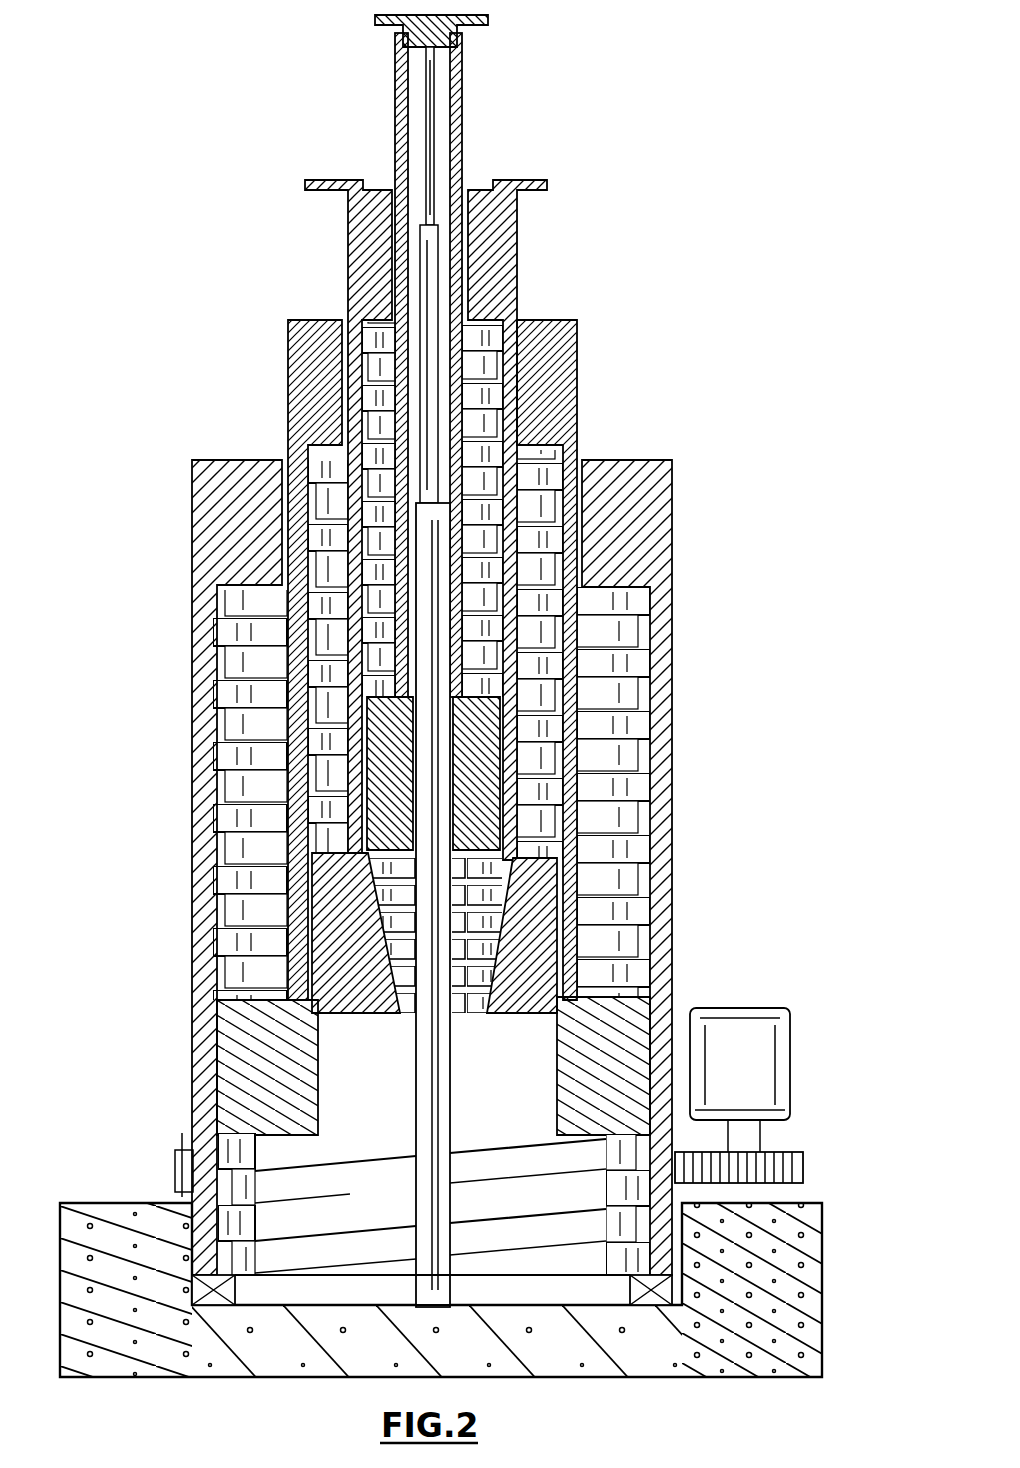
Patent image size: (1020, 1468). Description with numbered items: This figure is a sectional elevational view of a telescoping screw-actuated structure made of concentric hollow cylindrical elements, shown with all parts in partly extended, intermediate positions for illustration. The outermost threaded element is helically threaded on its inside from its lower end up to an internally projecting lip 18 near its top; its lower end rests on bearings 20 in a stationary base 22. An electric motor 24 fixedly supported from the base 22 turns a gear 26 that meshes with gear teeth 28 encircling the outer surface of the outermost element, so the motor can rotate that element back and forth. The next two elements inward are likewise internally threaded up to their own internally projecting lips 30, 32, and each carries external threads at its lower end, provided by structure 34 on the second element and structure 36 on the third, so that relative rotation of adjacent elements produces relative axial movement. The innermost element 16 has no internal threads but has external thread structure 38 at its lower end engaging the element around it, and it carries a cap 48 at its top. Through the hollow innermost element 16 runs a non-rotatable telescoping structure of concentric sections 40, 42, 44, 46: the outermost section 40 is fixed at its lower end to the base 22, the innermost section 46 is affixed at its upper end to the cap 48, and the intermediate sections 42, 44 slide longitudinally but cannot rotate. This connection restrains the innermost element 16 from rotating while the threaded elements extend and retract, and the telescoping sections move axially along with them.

The innermost element 16 is at (462, 130).
The internally projecting lip 18 is at (630, 460).
The bearings 20 is at (640, 1285).
The stationary base 22 is at (822, 1268).
The electric motor 24 is at (792, 1025).
The gear 26 is at (805, 1158).
The gear teeth 28 is at (175, 1160).
The internally projecting lip 30 is at (292, 420).
The internally projecting lip 32 is at (382, 302).
The external thread structure 34 is at (322, 1092).
The external thread structure 36 is at (348, 1015).
The external thread structure 38 is at (383, 855).
The outermost telescoping section 40 is at (420, 1190).
The telescoping section 42 is at (450, 386).
The telescoping section 44 is at (438, 282).
The innermost telescoping section 46 is at (426, 118).
The cap 48 is at (488, 22).